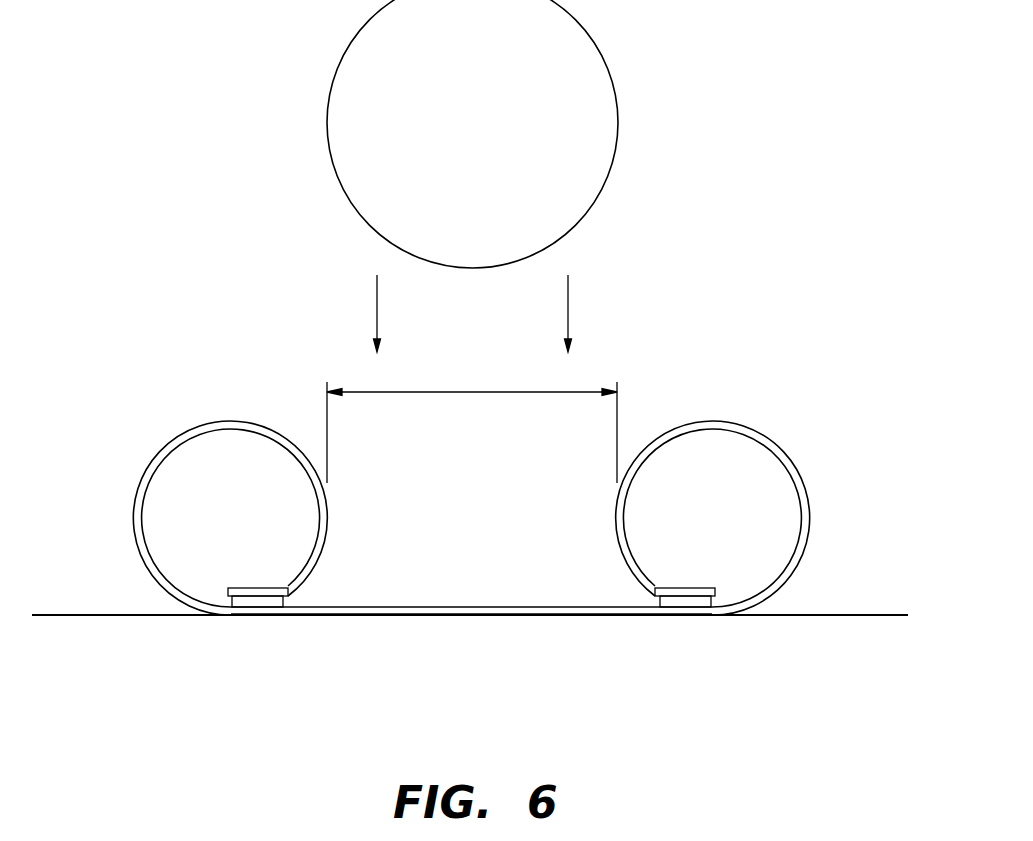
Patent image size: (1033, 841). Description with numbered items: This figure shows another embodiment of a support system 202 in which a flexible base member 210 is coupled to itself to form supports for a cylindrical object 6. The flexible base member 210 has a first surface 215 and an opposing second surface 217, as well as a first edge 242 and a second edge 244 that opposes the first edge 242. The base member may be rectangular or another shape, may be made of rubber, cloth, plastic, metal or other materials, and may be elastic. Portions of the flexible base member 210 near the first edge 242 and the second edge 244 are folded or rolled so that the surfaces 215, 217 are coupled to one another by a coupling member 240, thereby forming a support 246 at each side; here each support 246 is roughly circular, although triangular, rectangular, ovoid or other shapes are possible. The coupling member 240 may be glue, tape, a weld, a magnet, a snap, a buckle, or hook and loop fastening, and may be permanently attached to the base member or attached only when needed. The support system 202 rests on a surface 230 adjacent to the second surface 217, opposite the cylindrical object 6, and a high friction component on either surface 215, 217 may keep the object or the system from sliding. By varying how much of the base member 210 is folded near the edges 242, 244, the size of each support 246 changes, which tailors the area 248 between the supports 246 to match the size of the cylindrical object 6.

The cylindrical object 6 is at (462, 138).
The support system 202 is at (809, 175).
The flexible base member 210 is at (471, 614).
The first surface 215 is at (518, 607).
The second surface 217 is at (458, 615).
The surface 230 is at (865, 615).
The coupling member 240 is at (258, 602).
The first edge 242 is at (228, 592).
The second edge 244 is at (715, 592).
The support 246 is at (133, 411).
The area 248 is at (462, 393).